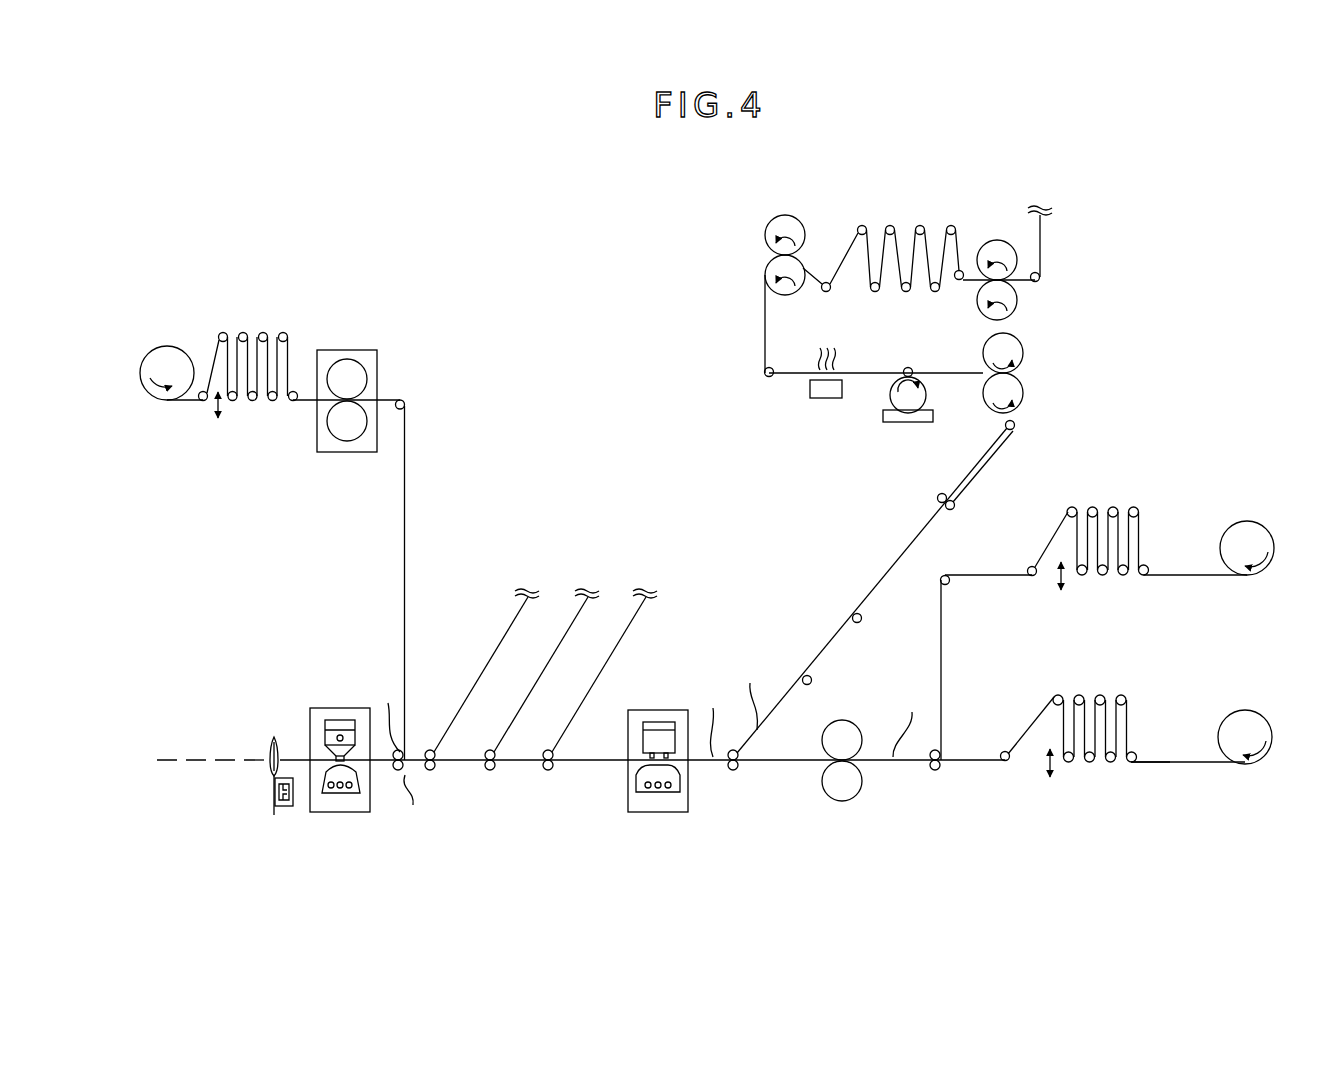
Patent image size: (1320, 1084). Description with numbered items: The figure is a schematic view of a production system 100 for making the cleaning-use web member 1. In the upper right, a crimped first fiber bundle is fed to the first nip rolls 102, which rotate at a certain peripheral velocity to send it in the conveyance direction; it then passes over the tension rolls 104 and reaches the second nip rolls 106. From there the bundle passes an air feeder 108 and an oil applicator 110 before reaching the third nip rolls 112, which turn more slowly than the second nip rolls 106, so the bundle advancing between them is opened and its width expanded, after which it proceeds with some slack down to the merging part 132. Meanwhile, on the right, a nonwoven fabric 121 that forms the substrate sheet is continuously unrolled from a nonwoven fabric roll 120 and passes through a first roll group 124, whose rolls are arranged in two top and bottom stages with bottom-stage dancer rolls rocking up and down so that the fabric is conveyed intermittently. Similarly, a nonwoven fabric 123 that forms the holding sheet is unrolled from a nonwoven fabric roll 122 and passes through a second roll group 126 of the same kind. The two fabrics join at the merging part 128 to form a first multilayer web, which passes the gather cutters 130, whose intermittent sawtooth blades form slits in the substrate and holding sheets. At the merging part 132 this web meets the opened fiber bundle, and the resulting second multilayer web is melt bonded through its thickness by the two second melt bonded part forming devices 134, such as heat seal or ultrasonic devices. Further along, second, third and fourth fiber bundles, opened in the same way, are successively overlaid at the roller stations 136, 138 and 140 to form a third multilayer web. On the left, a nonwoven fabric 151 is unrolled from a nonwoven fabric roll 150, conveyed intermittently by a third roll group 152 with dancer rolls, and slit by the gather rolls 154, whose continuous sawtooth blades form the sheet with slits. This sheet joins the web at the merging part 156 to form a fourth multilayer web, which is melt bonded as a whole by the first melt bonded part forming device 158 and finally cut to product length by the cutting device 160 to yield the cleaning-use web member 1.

The cleaning-use web member 1 is at (197, 762).
The label production system 100 is at (1142, 220).
The first nip rolls 102 is at (993, 250).
The tension rolls 104 is at (920, 226).
The second nip rolls 106 is at (791, 235).
The air feeder 108 is at (810, 392).
The oil applicator 110 is at (895, 400).
The third nip rolls 112 is at (1015, 350).
The nonwoven fabric roll 120 is at (1245, 722).
The nonwoven fabric 121 is at (1165, 760).
The nonwoven fabric roll 122 is at (1245, 535).
The nonwoven fabric 123 is at (1175, 575).
The first roll group 124 is at (1090, 687).
The second roll group 126 is at (1092, 497).
The merging part 128 is at (947, 750).
The gather cutters 130 is at (838, 725).
The merging part 132 is at (738, 775).
The second melt bonded part forming devices 134 is at (662, 708).
The roller pair 136 is at (552, 775).
The roller pair 138 is at (492, 775).
The roller pair 140 is at (433, 775).
The nonwoven fabric roll 150 is at (167, 358).
The nonwoven fabric 151 is at (185, 402).
The third roll group 152 is at (268, 318).
The gather rolls 154 is at (348, 345).
The merging part 156 is at (398, 775).
The first melt bonded part forming device 158 is at (325, 708).
The cutting device 160 is at (285, 808).